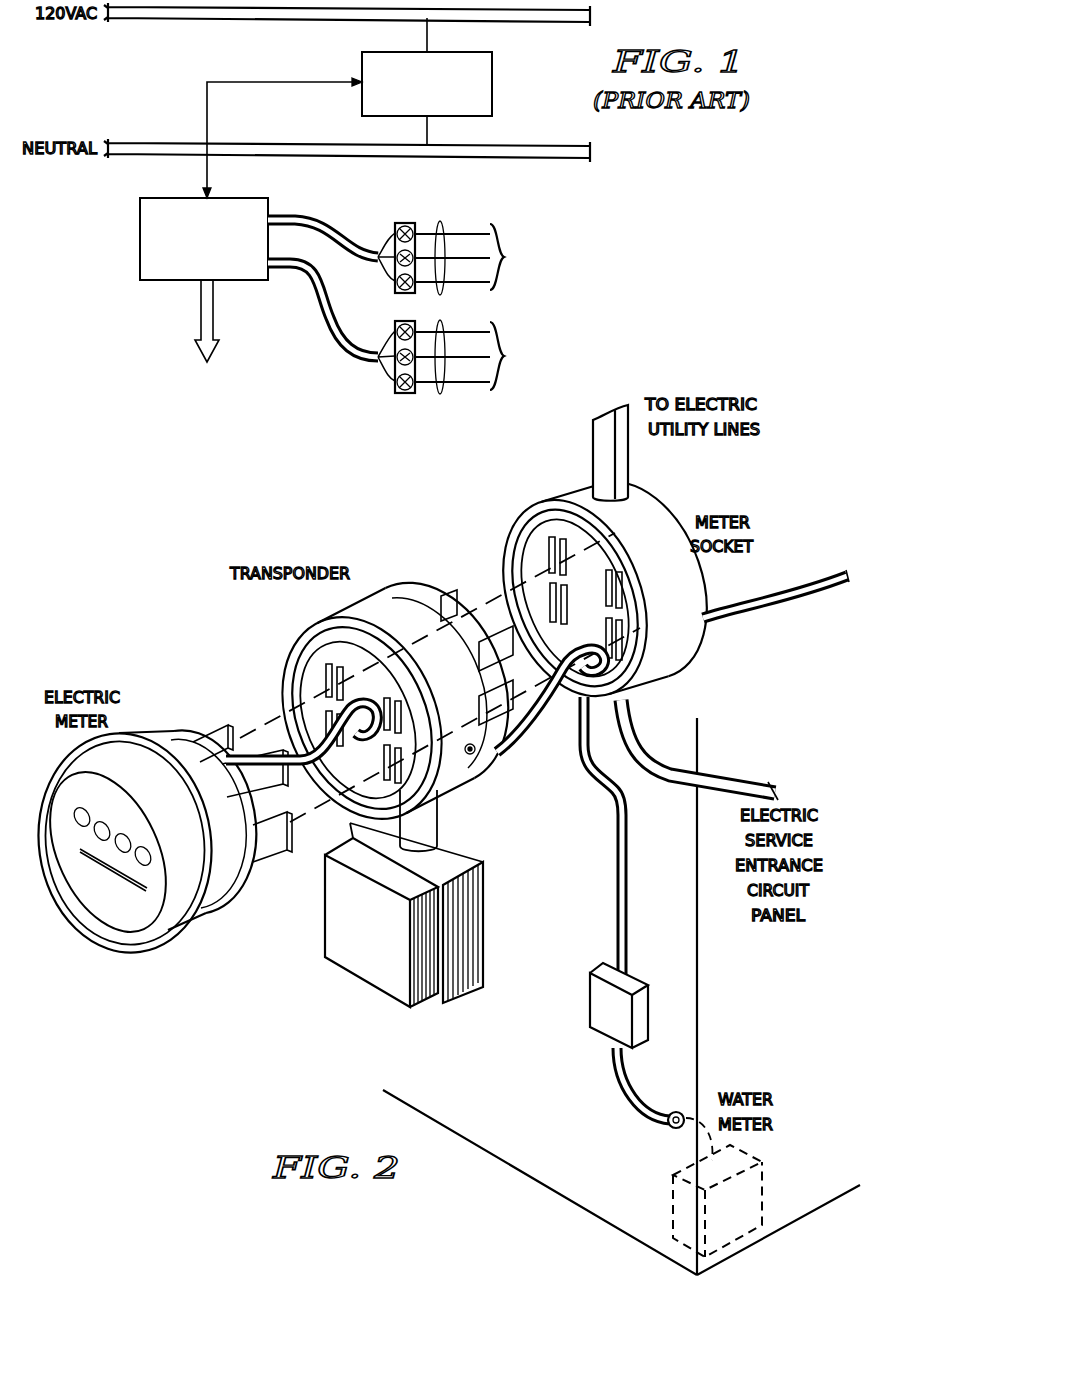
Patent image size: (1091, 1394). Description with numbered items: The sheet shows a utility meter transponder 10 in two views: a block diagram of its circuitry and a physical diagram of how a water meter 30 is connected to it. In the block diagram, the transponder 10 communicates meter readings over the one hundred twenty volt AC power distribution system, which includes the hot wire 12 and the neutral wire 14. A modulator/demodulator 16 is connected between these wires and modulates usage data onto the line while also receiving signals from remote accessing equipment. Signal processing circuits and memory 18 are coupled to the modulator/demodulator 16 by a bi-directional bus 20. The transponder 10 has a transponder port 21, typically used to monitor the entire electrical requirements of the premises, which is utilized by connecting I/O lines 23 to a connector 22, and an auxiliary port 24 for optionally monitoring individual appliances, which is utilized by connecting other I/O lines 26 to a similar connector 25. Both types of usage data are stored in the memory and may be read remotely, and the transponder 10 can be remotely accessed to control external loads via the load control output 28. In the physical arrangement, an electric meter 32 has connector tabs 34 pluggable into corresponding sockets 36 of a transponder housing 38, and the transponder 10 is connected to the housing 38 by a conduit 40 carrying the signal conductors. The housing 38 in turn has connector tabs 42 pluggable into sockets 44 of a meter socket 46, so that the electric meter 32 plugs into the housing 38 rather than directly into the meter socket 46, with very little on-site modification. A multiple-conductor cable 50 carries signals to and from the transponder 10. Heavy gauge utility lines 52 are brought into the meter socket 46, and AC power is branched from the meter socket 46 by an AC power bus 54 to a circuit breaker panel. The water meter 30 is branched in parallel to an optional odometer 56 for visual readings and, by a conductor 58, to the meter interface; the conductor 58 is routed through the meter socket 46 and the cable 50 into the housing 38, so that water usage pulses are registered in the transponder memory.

In FIG. 1, the utility meter transponder 10 is at (312, 196).
In FIG. 2, the utility meter transponder 10 is at (476, 1010).
In FIG. 1, the hot wire 12 is at (135, 19).
In FIG. 1, the neutral wire 14 is at (515, 145).
In FIG. 1, the modulator/demodulator 16 is at (492, 65).
In FIG. 1, the signal processing circuits and memory 18 is at (140, 218).
In FIG. 1, the bi-directional bus 20 is at (207, 100).
In FIG. 1, the transponder port 21 is at (333, 233).
In FIG. 1, the connector 22 is at (400, 222).
In FIG. 1, the I/O lines 23 is at (444, 222).
In FIG. 2, the I/O lines 23 is at (262, 748).
In FIG. 1, the auxiliary port 24 is at (338, 320).
In FIG. 1, the connector 25 is at (400, 393).
In FIG. 1, the I/O lines 26 is at (443, 393).
In FIG. 1, the load control output 28 is at (213, 312).
In FIG. 2, the load control output 28 is at (760, 610).
In FIG. 2, the water meter 30 is at (672, 1255).
In FIG. 2, the electric meter 32 is at (183, 923).
In FIG. 2, the connector tabs 34 is at (210, 727).
In FIG. 2, the sockets 36 is at (325, 668).
In FIG. 2, the transponder housing 38 is at (330, 622).
In FIG. 2, the conduit 40 is at (440, 832).
In FIG. 2, the connector tabs 42 is at (447, 600).
In FIG. 2, the sockets 44 is at (540, 533).
In FIG. 2, the meter socket 46 is at (688, 651).
In FIG. 2, the cable 50 is at (540, 735).
In FIG. 2, the utility lines 52 is at (625, 458).
In FIG. 2, the AC power bus 54 is at (720, 767).
In FIG. 2, the odometer 56 is at (590, 1023).
In FIG. 2, the conductor 58 is at (615, 879).